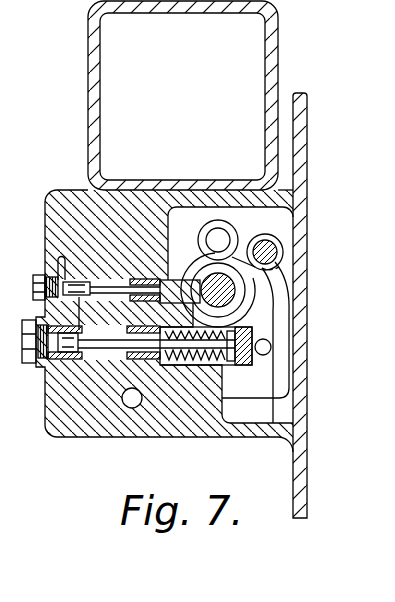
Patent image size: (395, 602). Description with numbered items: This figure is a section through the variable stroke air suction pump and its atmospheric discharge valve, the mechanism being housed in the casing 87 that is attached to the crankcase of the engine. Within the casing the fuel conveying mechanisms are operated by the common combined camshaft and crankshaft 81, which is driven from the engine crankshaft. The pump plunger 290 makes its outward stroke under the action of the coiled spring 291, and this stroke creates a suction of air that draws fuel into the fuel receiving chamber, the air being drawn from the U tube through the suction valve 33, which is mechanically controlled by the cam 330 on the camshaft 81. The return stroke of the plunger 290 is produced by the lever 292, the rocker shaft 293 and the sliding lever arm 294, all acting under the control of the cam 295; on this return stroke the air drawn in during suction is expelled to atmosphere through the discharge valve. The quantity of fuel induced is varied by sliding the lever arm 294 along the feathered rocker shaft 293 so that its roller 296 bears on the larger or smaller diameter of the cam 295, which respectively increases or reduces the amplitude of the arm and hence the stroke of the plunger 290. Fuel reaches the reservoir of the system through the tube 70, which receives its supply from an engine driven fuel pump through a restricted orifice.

The casing 87 is at (62, 222).
The suction valve 33 is at (110, 283).
The roller 296 is at (226, 233).
The sliding lever arm 294 is at (274, 229).
The cam 295 is at (194, 276).
The rocker shaft 293 is at (277, 248).
The combined camshaft and crankshaft 81 is at (228, 289).
The cam 330 is at (253, 310).
The lever 292 is at (273, 333).
The plunger 290 is at (108, 348).
The coiled spring 291 is at (183, 358).
The tube 70 is at (132, 409).